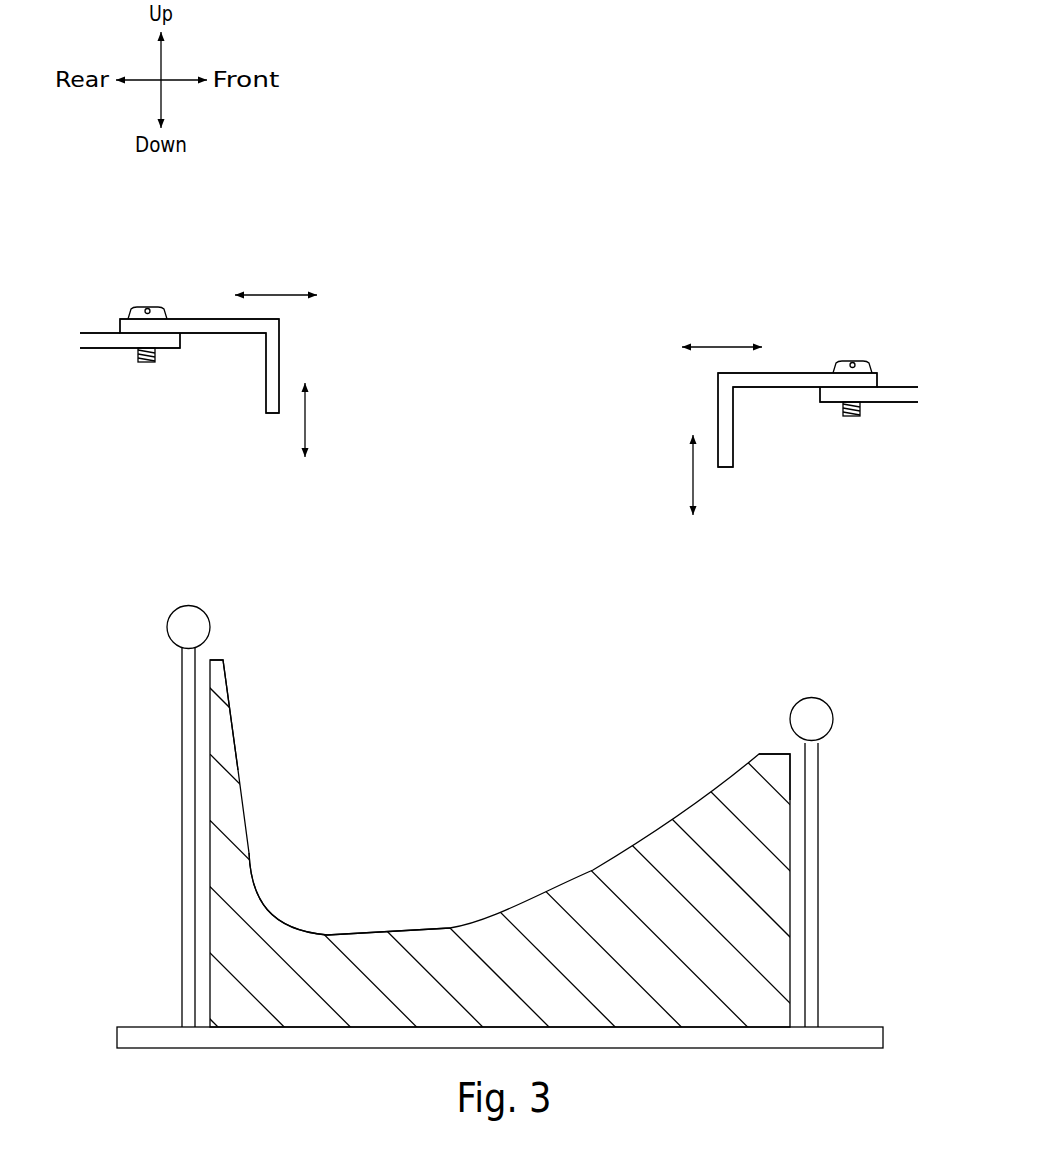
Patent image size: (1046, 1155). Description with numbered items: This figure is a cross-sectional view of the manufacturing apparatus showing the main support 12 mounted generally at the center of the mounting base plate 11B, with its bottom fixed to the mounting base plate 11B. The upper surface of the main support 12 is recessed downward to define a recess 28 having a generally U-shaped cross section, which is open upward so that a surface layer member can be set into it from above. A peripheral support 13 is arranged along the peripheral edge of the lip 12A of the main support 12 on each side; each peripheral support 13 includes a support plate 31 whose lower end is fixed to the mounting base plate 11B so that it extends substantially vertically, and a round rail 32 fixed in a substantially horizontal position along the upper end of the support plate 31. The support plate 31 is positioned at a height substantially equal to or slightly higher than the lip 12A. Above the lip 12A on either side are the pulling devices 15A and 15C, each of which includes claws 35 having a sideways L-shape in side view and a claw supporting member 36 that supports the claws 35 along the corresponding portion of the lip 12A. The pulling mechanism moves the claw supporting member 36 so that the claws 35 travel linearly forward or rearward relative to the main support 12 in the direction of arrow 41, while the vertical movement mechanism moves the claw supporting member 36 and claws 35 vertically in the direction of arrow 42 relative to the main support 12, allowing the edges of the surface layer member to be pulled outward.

The pulling device 15C is at (203, 297).
The pulling device 15A is at (806, 350).
The claw 35 is at (272, 350).
The claw supporting member 36 is at (106, 340).
The arrow 41 is at (714, 346).
The arrow 42 is at (692, 483).
The mounting base plate 11B is at (864, 1037).
The main support 12 is at (523, 794).
The lip 12A is at (223, 660).
The recess 28 is at (365, 930).
The peripheral support 13 is at (499, 763).
The support plate 31 is at (188, 737).
The round rail 32 is at (178, 605).